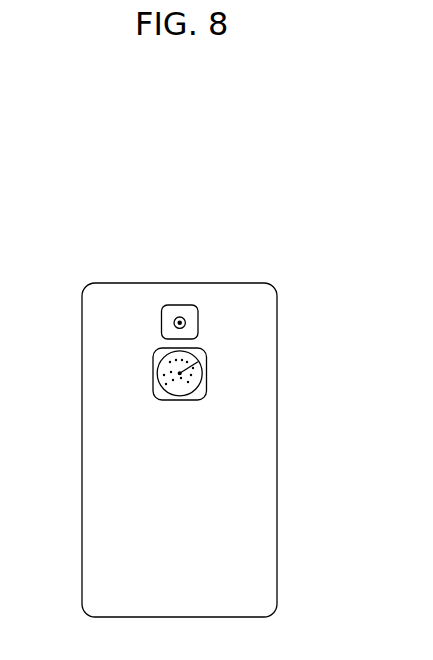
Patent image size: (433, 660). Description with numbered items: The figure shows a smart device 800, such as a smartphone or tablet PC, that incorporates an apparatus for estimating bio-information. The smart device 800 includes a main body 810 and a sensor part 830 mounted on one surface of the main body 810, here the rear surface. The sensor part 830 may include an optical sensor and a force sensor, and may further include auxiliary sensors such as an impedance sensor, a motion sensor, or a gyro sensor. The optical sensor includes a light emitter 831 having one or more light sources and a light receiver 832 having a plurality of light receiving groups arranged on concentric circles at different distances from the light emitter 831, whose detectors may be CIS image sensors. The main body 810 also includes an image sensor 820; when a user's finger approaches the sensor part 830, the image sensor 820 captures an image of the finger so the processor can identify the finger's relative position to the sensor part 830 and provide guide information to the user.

The smart device 800 is at (152, 250).
The main body 810 is at (210, 283).
The image sensor 820 is at (198, 323).
The sensor part 830 is at (207, 380).
The light emitter 831 is at (206, 361).
The light receiver 832 is at (158, 360).